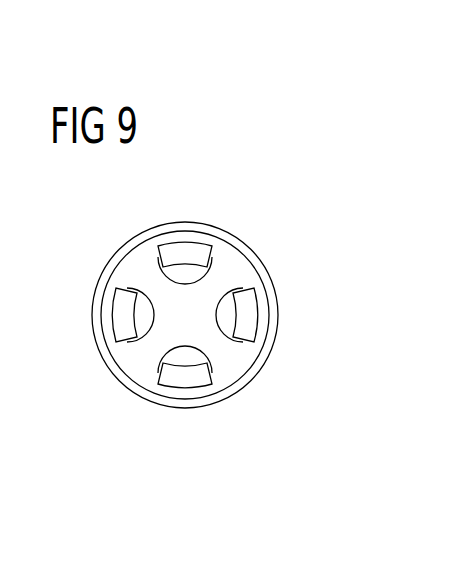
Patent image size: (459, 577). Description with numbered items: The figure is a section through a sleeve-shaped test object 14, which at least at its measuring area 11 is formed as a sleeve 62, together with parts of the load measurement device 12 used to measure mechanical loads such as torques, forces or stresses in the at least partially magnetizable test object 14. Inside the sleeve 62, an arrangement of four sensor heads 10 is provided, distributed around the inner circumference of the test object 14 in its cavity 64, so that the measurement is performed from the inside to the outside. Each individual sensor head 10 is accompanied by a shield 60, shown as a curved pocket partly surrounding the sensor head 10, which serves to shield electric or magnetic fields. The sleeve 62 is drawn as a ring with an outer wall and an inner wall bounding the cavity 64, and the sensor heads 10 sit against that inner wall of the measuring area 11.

The sensor head 10 is at (182, 251).
The measuring area 11 is at (251, 206).
The load measurement device 12 is at (235, 443).
The test object 14 is at (155, 222).
The shield 60 is at (158, 263).
The sleeve 62 is at (267, 361).
The cavity 64 is at (140, 386).